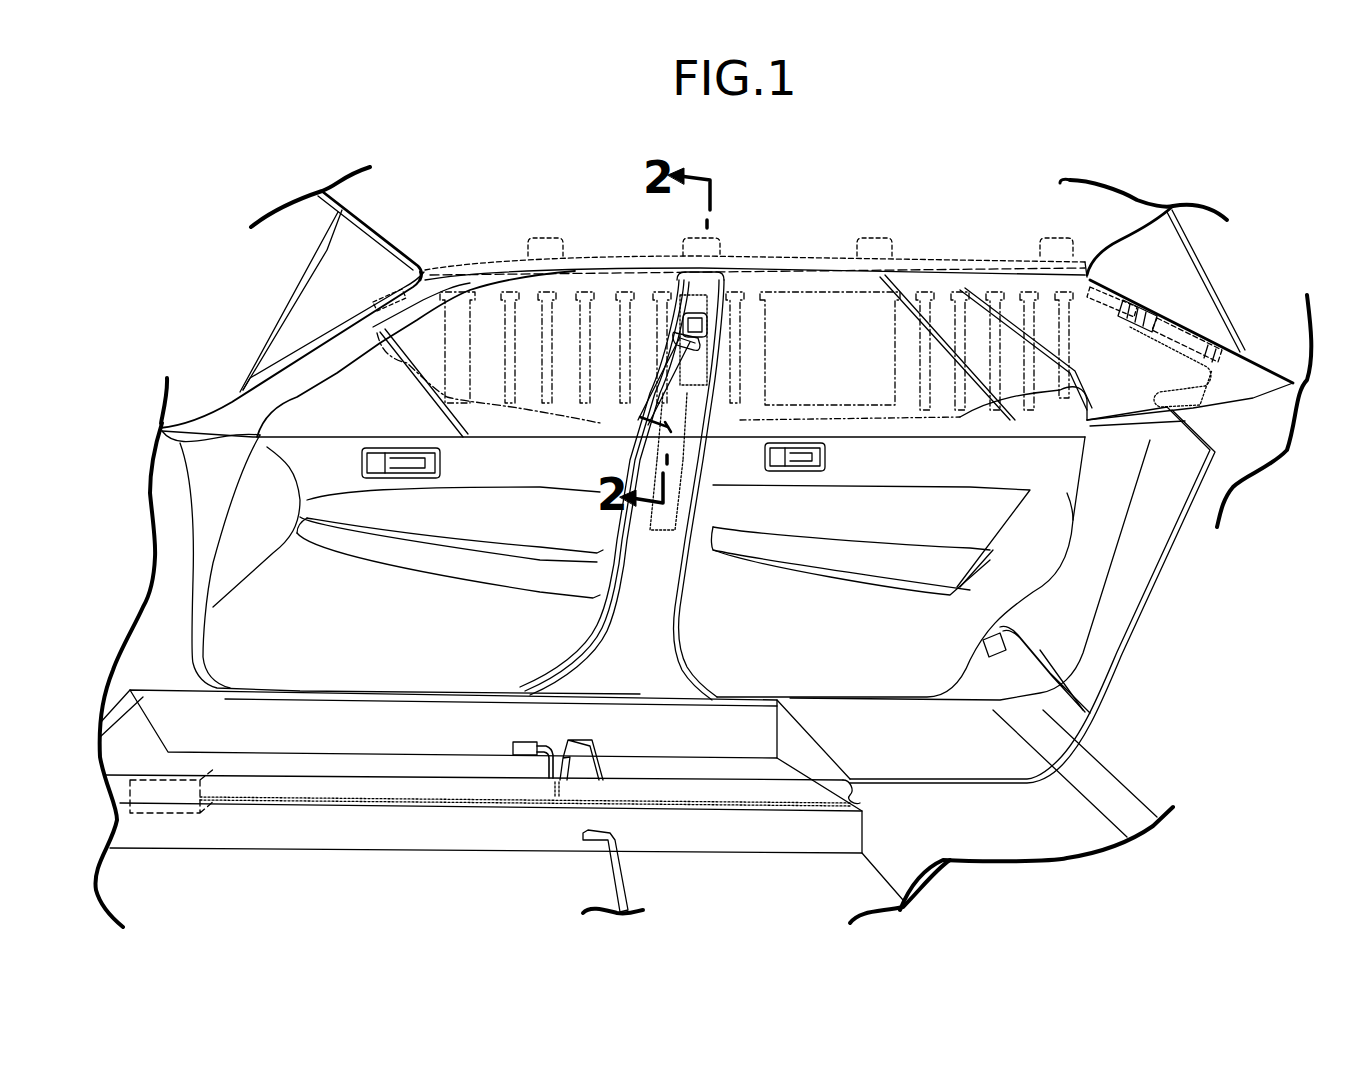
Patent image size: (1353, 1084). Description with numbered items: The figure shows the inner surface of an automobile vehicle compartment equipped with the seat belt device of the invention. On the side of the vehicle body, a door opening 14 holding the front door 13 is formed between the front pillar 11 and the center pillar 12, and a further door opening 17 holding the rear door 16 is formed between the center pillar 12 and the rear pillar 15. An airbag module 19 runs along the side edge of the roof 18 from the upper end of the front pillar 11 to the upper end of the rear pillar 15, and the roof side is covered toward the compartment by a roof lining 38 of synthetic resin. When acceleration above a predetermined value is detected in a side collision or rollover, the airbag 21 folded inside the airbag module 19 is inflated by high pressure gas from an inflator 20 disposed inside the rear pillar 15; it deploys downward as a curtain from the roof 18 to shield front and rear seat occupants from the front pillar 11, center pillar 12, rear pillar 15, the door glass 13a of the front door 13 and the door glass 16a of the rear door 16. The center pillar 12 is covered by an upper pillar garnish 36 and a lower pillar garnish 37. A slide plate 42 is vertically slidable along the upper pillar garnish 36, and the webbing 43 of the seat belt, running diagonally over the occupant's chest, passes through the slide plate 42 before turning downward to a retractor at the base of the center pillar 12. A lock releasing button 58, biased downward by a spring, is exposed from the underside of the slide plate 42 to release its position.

The front pillar 11 is at (317, 350).
The center pillar 12 is at (736, 438).
The front door 13 is at (487, 537).
The door glass of the front door 13a is at (353, 417).
The door opening 14 is at (237, 492).
The rear pillar 15 is at (1093, 375).
The rear door 16 is at (900, 537).
The door glass of the rear door 16a is at (873, 413).
The door opening 17 is at (1067, 493).
The roof 18 is at (1043, 183).
The airbag module 19 is at (628, 250).
The inflator 20 is at (1200, 324).
The airbag 21 is at (493, 400).
The upper pillar garnish 36 is at (720, 380).
The lower pillar garnish 37 is at (690, 500).
The roof lining 38 is at (815, 204).
The slide plate 42 is at (660, 357).
The webbing 43 is at (650, 420).
The lock releasing button 58 is at (693, 343).